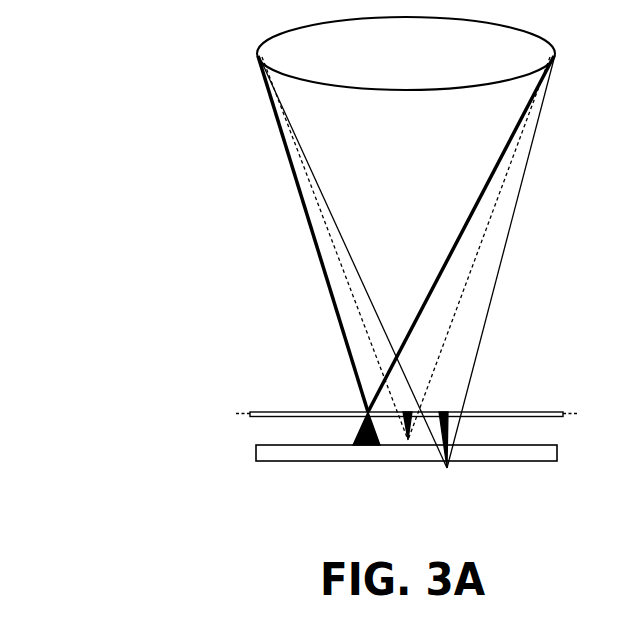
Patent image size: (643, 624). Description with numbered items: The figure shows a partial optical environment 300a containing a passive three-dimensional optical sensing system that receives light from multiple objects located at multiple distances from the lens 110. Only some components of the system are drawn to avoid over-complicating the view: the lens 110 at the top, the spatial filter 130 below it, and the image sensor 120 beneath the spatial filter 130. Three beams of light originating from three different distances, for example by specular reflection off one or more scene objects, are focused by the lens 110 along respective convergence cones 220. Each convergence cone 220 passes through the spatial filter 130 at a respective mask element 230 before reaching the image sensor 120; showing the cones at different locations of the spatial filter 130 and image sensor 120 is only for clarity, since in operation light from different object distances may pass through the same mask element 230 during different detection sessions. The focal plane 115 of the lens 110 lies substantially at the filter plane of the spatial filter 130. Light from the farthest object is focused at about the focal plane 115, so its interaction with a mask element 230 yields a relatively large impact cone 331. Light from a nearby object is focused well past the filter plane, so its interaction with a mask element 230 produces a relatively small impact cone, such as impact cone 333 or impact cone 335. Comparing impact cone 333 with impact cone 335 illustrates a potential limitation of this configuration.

The partial optical environment 300a is at (177, 78).
The lens 110 is at (406, 53).
The convergence cones 220 is at (507, 240).
The mask element 230 is at (440, 412).
The spatial filter 130 is at (297, 412).
The focal plane 115 is at (237, 413).
The image sensor 120 is at (256, 445).
The impact cone 331 is at (367, 446).
The impact cone 333 is at (408, 443).
The impact cone 335 is at (455, 447).